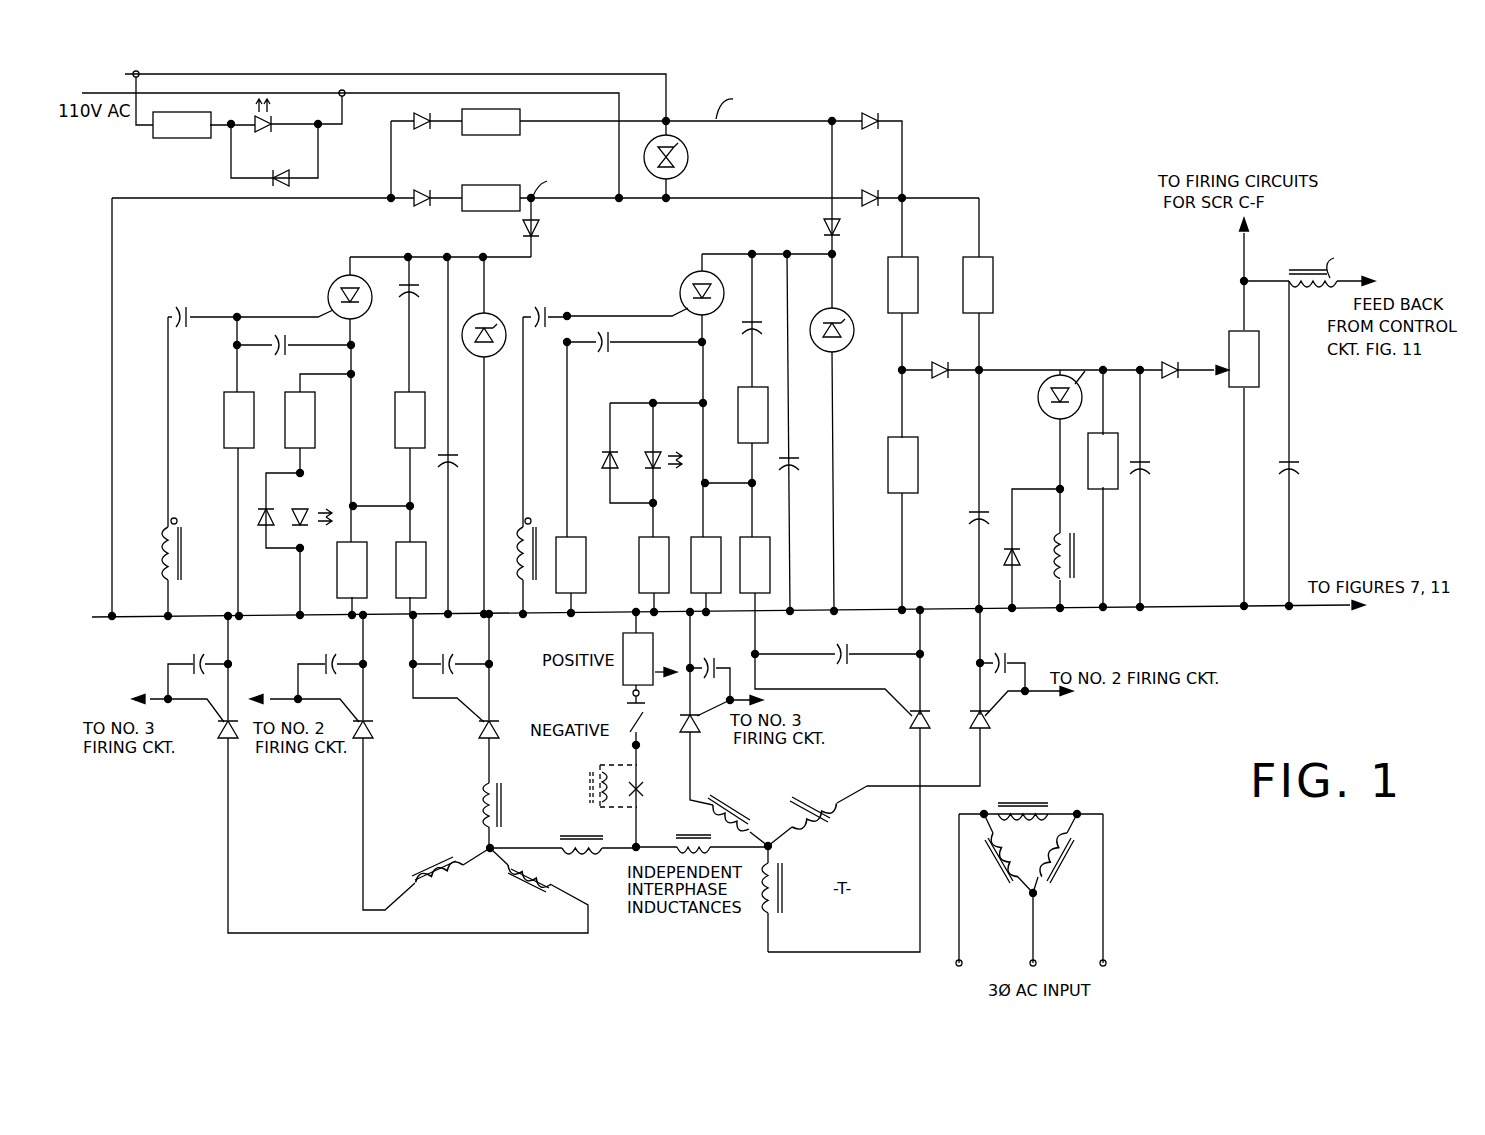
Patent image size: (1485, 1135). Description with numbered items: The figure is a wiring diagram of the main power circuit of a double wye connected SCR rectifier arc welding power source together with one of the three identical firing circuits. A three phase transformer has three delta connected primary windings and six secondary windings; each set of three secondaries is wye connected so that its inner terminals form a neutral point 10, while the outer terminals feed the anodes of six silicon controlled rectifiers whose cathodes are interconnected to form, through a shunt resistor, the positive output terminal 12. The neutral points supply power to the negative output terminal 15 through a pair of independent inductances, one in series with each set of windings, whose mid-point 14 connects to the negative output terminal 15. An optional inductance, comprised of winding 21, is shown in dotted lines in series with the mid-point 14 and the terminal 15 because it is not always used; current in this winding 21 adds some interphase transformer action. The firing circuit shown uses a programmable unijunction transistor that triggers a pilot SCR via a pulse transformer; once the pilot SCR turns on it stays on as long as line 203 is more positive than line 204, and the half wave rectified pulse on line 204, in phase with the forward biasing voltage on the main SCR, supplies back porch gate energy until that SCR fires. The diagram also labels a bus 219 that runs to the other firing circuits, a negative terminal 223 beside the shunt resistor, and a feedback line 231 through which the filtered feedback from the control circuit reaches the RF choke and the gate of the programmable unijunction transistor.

The neutral point 10 is at (639, 761).
The positive output terminal 12 is at (632, 693).
The mid-point 14 is at (649, 833).
The negative output terminal 15 is at (638, 744).
The winding 21 is at (600, 765).
The line 203 is at (556, 182).
The line 204 is at (740, 105).
The positive bus 219 is at (1155, 606).
The negative terminal 223 is at (672, 685).
The feedback line 231 is at (1347, 259).